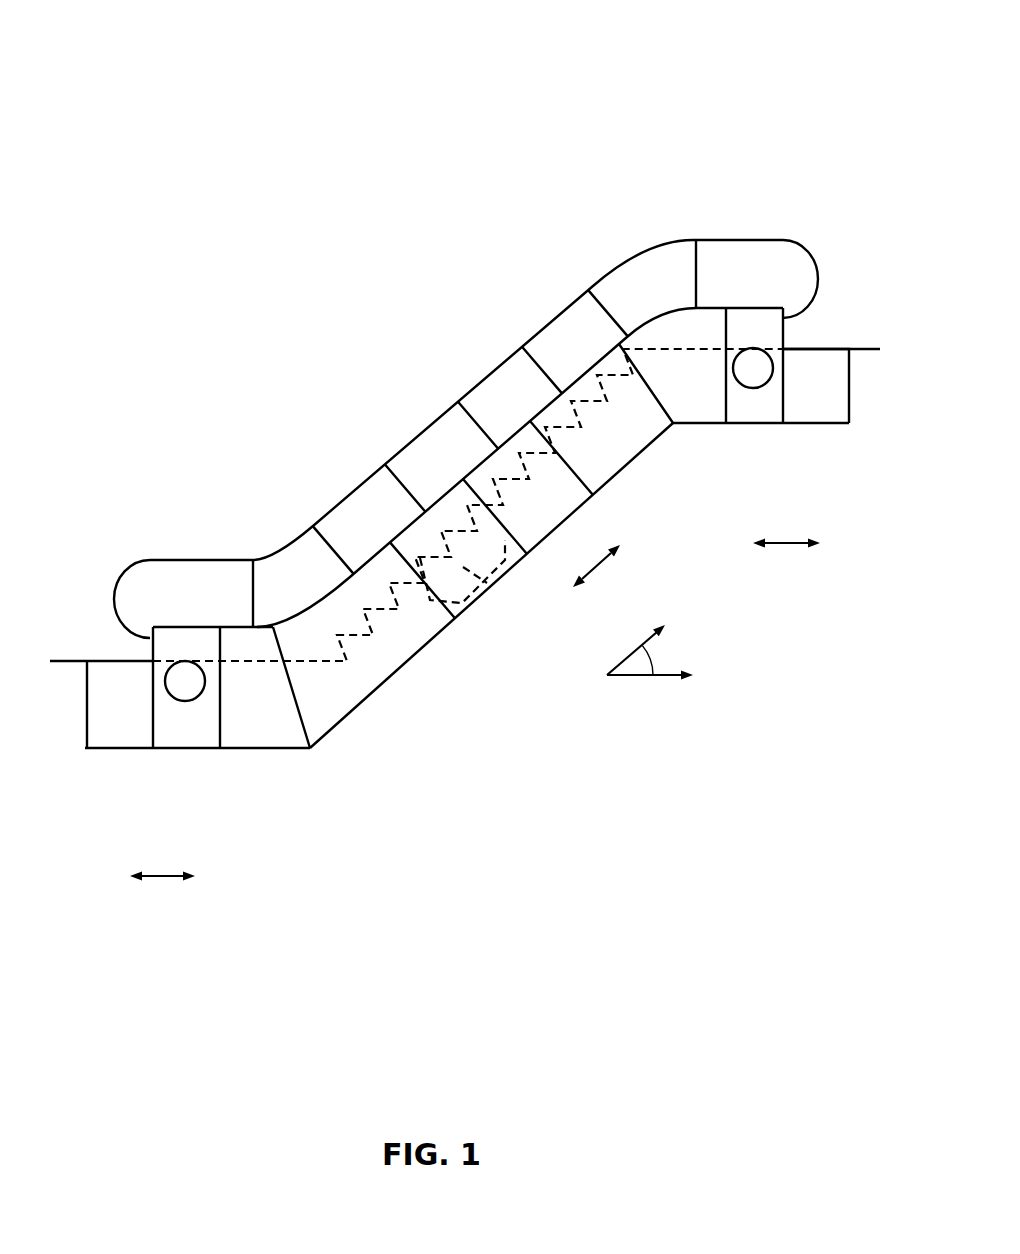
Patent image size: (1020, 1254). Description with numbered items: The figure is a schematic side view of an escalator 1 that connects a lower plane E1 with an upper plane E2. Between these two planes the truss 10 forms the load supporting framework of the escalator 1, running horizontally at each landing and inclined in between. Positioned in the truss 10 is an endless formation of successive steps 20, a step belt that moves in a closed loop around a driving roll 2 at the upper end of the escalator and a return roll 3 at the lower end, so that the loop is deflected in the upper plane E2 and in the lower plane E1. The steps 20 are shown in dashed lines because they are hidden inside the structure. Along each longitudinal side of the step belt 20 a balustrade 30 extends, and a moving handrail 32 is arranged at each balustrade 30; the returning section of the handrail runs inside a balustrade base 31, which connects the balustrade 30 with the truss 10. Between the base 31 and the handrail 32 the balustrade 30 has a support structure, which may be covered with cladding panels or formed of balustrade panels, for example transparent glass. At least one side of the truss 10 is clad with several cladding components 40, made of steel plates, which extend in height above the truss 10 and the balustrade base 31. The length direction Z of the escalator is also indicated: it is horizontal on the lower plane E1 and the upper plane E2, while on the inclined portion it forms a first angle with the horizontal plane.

The escalator 1 is at (671, 79).
The driving roll 2 is at (755, 380).
The return roll 3 is at (185, 693).
The truss 10 is at (490, 570).
The steps 20 is at (627, 440).
The balustrade 30 is at (737, 222).
The balustrade base 31 is at (752, 293).
The handrail 32 is at (217, 541).
The cladding components 40 is at (694, 403).
The lower plane E1 is at (101, 644).
The upper plane E2 is at (831, 333).
The length direction Z is at (788, 541).